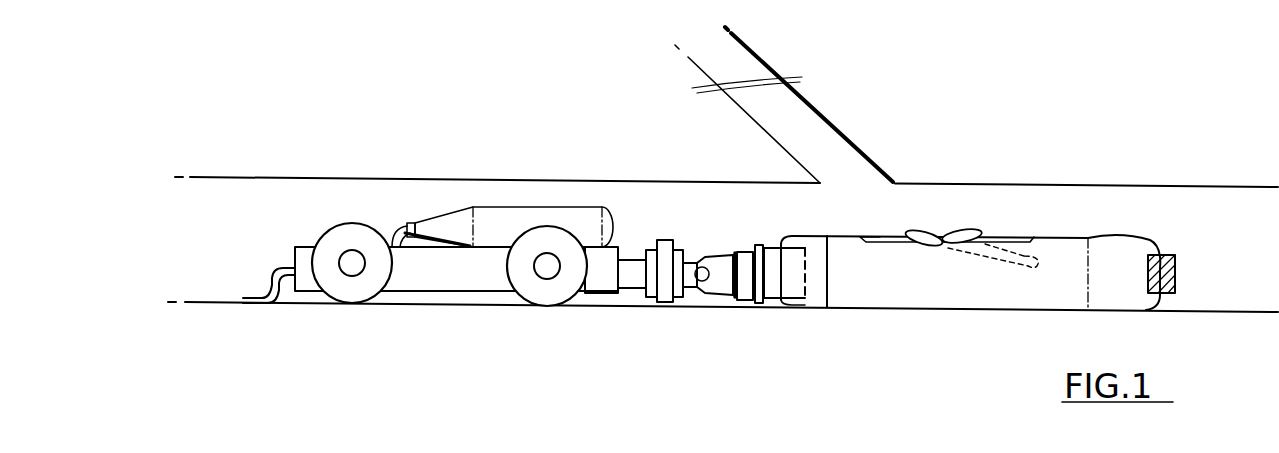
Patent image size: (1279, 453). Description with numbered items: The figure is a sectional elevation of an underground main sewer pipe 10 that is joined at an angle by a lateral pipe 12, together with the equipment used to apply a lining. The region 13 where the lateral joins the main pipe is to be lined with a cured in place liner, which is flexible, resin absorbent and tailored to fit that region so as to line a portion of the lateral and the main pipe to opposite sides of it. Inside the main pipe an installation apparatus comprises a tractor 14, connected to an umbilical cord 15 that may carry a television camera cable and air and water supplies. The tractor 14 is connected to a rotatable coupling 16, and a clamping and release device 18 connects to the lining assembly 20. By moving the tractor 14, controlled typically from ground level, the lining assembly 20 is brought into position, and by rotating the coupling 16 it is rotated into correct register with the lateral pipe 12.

The underground main sewer pipe 10 is at (460, 178).
The lateral pipe 12 is at (833, 121).
The region of the lateral/main pipe connection 13 is at (912, 166).
The tractor 14 is at (418, 261).
The umbilical cord 15 is at (272, 268).
The coupling 16 is at (669, 240).
The clamping and release device 18 is at (734, 254).
The lining assembly 20 is at (1003, 210).